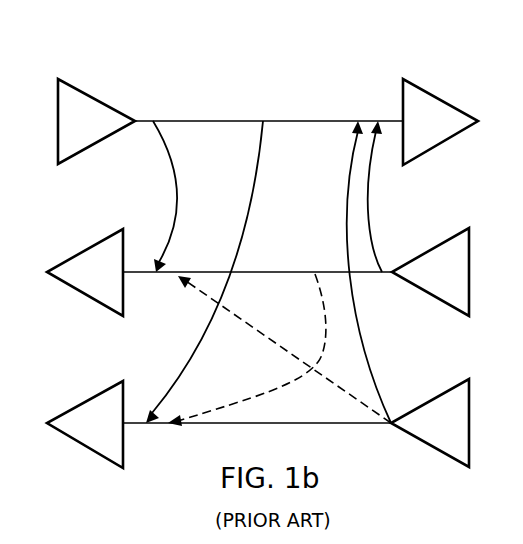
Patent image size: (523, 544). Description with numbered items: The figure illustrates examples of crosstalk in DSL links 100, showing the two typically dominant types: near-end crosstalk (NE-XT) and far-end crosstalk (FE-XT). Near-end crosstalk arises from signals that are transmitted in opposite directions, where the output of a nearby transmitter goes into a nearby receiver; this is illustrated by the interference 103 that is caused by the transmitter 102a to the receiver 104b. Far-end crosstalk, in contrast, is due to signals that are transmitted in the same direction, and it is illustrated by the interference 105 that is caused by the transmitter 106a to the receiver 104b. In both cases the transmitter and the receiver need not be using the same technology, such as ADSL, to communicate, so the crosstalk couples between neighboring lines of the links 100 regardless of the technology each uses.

The links 100 is at (253, 242).
The transmitter 102a is at (97, 100).
The interference 103 is at (177, 178).
The receiver 104b is at (83, 251).
The interference 105 is at (258, 332).
The transmitter 106a is at (433, 399).